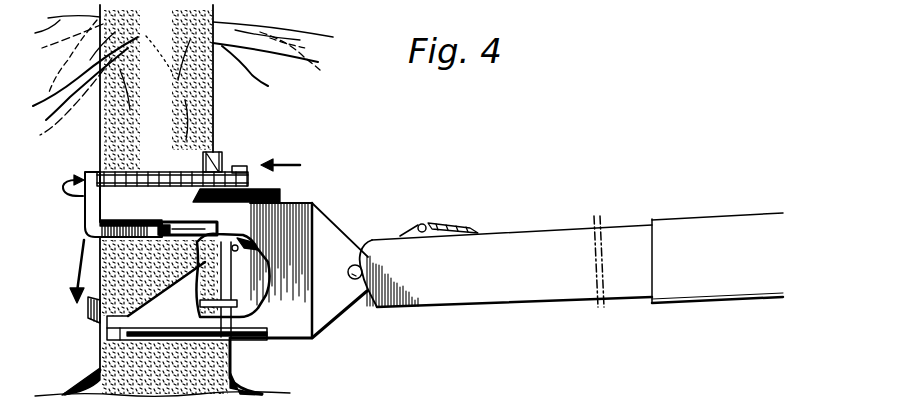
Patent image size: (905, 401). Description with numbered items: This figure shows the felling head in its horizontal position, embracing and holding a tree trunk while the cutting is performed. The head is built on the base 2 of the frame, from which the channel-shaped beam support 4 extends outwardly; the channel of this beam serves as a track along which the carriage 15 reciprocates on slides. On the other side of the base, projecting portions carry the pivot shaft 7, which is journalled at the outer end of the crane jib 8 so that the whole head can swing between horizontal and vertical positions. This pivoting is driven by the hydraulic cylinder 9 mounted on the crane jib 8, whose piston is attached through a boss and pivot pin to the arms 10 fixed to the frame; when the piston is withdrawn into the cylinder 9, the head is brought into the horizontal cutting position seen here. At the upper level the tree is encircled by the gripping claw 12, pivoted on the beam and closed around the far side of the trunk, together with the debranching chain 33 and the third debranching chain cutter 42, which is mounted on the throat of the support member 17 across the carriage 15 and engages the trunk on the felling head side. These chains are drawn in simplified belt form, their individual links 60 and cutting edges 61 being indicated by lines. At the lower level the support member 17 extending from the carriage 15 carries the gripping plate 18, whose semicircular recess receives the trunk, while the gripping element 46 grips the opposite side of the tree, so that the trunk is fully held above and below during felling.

The base of the frame 2 is at (287, 225).
The beam support 4 is at (122, 210).
The pivot shaft 7 is at (351, 266).
The crane jib 8 is at (493, 290).
The hydraulic cylinder 9 is at (457, 226).
The arms 10 is at (418, 223).
The gripping claw 12 is at (95, 226).
The carriage 15 is at (280, 194).
The support member 17 is at (228, 277).
The gripping plate 18 is at (220, 330).
The debranching chain 33 is at (243, 172).
The debranching flexible chain cutter 42 is at (218, 156).
The gripping element 46 is at (100, 323).
The link 60 is at (190, 208).
The cutting edge 61 is at (166, 174).